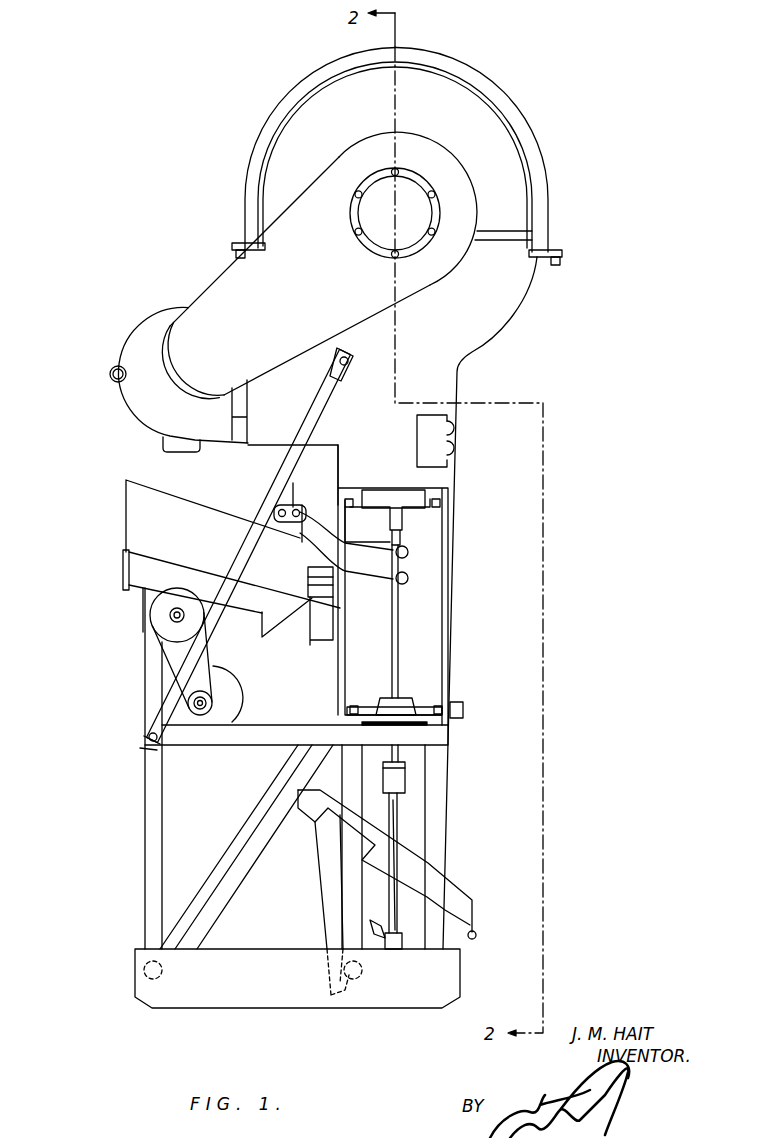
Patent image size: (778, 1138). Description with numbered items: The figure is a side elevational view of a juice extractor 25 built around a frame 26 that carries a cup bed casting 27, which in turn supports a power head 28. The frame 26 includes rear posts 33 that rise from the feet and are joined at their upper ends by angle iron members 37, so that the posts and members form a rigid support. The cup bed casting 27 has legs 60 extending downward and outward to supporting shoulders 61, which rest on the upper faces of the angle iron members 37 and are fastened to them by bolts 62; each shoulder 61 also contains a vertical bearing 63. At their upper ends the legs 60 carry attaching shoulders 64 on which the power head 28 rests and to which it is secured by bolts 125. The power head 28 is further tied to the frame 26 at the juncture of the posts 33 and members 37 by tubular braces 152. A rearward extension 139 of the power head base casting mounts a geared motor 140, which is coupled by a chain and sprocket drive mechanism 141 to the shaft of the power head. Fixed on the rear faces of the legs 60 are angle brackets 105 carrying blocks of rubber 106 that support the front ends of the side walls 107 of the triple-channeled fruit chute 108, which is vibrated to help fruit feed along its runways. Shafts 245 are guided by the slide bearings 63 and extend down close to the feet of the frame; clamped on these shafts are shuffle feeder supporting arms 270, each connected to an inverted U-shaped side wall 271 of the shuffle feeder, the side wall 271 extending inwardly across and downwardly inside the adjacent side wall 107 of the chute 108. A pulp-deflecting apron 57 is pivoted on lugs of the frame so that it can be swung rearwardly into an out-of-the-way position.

The juice extractor 25 is at (633, 84).
The power head 28 is at (513, 327).
The chain and sprocket drive mechanism 141 is at (215, 302).
The geared motor 140 is at (158, 422).
The rearward extension 139 is at (266, 435).
The side wall of shuffle feeder 271 is at (293, 493).
The side wall of fruit chute 107 is at (206, 524).
The fruit chute 108 is at (110, 564).
The block of rubber 106 is at (313, 587).
The angle bracket 105 is at (338, 611).
The tubular brace 152 is at (214, 628).
The rear post 33 is at (148, 795).
The angle iron member 37 is at (246, 739).
The frame 26 is at (470, 797).
The cup bed casting 27 is at (468, 584).
The leg 60 is at (427, 646).
The attaching shoulder 64 is at (445, 497).
The bolt 125 is at (350, 508).
The shuffle feeder supporting arm 270 is at (363, 568).
The shaft 245 is at (406, 625).
The vertical bearing 63 is at (395, 707).
The bolt 62 is at (353, 706).
The supporting shoulder 61 is at (446, 717).
The pulp-deflecting apron 57 is at (455, 896).